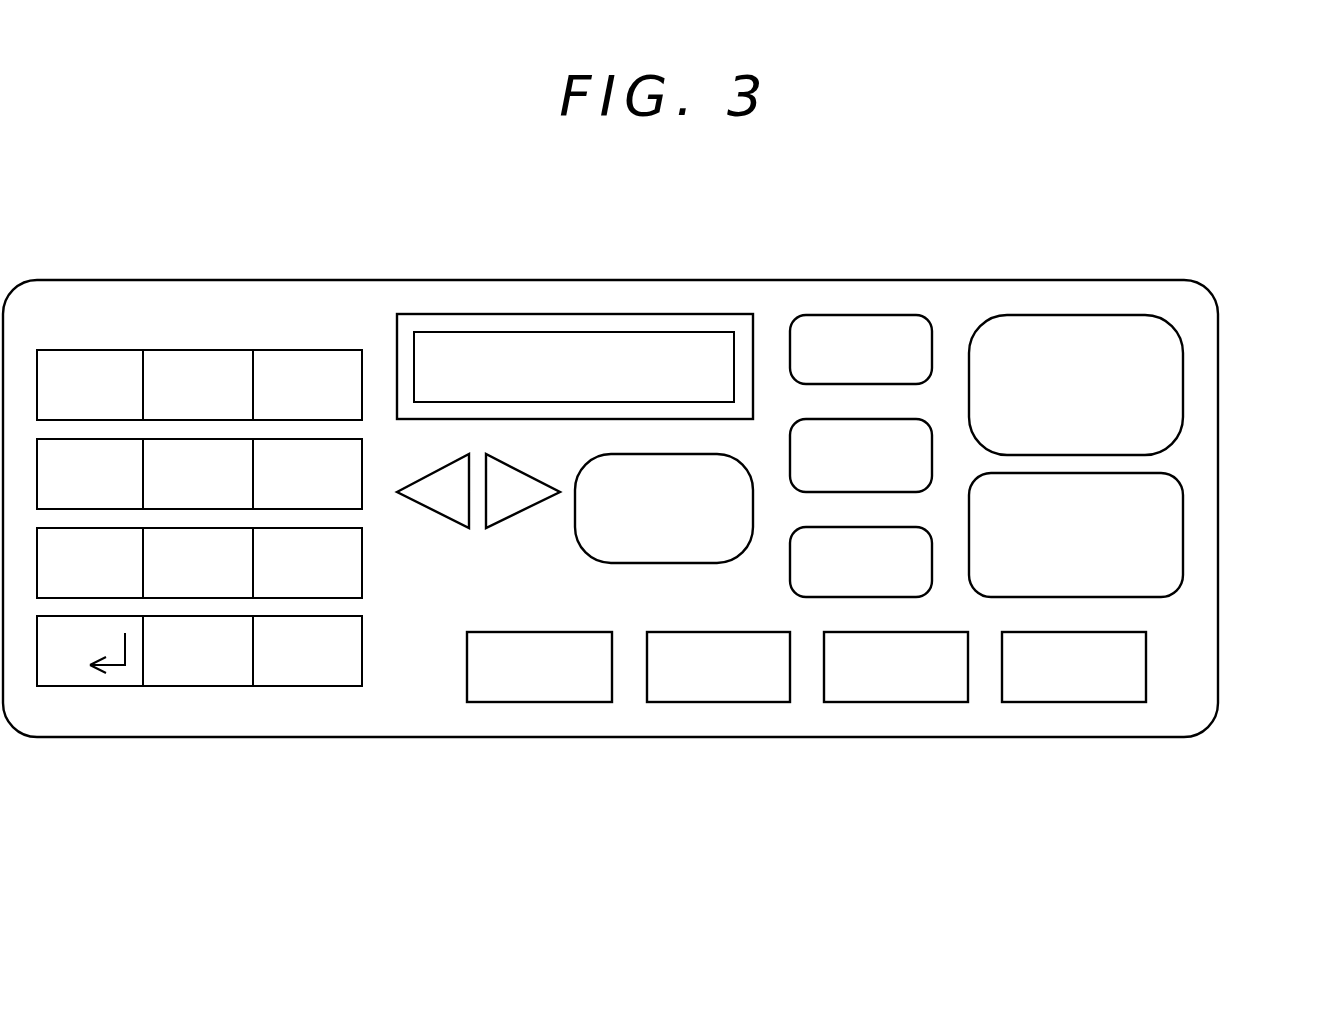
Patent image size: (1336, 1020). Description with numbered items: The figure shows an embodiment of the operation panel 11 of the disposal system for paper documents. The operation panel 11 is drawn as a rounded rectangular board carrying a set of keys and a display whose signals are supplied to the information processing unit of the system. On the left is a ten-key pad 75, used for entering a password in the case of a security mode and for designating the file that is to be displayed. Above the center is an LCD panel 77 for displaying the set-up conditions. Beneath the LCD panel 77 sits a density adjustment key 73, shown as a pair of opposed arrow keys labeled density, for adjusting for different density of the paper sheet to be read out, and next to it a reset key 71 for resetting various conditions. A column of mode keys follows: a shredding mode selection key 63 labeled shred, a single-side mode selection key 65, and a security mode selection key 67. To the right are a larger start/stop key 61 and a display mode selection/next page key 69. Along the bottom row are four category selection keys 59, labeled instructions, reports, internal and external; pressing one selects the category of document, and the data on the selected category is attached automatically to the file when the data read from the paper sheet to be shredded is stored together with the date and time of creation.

The operation panel 11 is at (214, 280).
The ten-key pad 75 is at (233, 688).
The LCD panel 77 is at (427, 314).
The density adjustment key 73 is at (477, 450).
The reset key 71 is at (670, 457).
The shredding mode selection key 63 is at (840, 315).
The single-side mode selection key 65 is at (923, 417).
The security mode selection key 67 is at (932, 547).
The start/stop key 61 is at (1183, 370).
The display mode selection/next page key 69 is at (1183, 545).
The category selection keys 59 is at (588, 694).